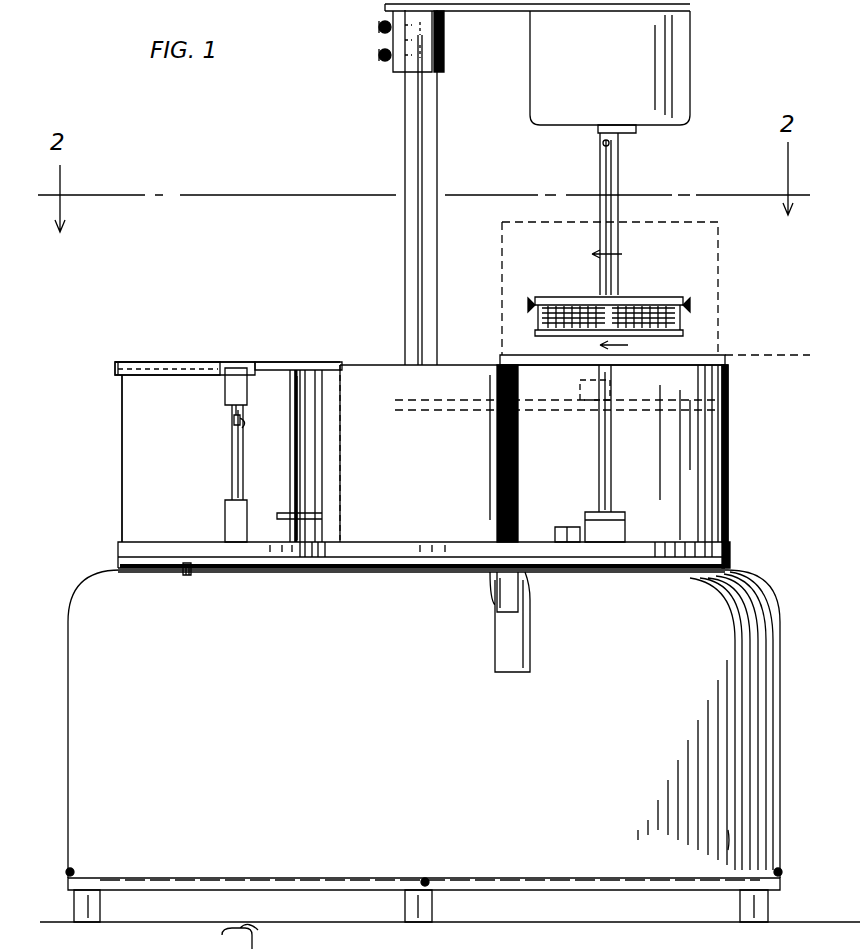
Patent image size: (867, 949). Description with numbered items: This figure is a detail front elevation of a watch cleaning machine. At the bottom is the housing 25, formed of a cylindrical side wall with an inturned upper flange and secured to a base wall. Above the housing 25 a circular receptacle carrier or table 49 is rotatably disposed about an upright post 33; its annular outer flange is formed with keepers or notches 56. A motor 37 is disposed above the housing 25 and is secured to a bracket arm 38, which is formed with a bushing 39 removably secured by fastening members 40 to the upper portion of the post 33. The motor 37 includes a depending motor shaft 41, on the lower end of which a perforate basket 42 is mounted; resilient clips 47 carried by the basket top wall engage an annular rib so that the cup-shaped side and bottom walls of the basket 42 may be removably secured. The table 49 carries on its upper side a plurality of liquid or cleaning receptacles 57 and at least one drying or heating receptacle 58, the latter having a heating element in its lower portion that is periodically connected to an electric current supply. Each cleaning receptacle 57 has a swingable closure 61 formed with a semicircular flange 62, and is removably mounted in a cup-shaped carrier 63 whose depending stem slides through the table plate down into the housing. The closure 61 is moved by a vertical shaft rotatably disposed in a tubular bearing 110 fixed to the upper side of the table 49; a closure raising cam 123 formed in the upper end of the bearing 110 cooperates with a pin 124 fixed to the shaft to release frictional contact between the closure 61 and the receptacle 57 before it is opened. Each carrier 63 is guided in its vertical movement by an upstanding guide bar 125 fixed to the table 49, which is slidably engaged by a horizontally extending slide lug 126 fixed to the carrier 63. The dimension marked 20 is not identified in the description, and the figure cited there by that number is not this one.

The dimension spacing 20 is at (627, 297).
The housing 25 is at (450, 746).
The post 33 is at (437, 162).
The motor 37 is at (702, 94).
The bracket arm 38 is at (500, 11).
The bushing 39 is at (444, 58).
The fastening members 40 is at (378, 57).
The motor shaft 41 is at (618, 162).
The basket 42 is at (665, 285).
The resilient clips 47 is at (527, 306).
The receptacle carrier or table 49 is at (744, 556).
The keepers or notches 56 is at (172, 577).
The cleaning receptacle 57 is at (137, 451).
The drying or heating receptacle 58 is at (376, 370).
The swingable closure 61 is at (264, 362).
The semicircular flange 62 is at (180, 362).
The cup-shaped carrier 63 is at (260, 556).
The tubular bearing 110 is at (230, 475).
The closure raising cam 123 is at (235, 440).
The pin 124 is at (233, 412).
The guide bar 125 is at (602, 428).
The slide lug 126 is at (617, 512).